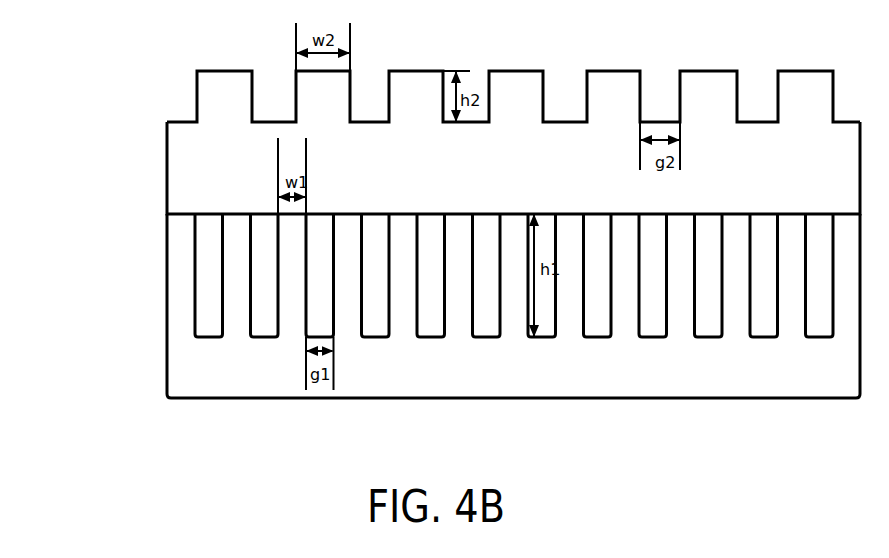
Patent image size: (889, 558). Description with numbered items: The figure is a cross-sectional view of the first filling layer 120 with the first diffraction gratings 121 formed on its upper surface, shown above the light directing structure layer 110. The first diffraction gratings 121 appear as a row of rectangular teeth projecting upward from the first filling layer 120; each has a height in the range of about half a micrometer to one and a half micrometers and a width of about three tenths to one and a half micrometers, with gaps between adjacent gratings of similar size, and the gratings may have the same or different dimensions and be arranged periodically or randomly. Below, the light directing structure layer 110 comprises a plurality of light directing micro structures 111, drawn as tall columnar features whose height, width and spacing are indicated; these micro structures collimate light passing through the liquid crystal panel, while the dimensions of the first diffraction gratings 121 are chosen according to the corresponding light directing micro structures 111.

The light directing structure layer 110 is at (200, 380).
The light directing micro structures 111 is at (182, 269).
The first filling layer 120 is at (180, 183).
The first diffraction gratings 121 is at (207, 88).